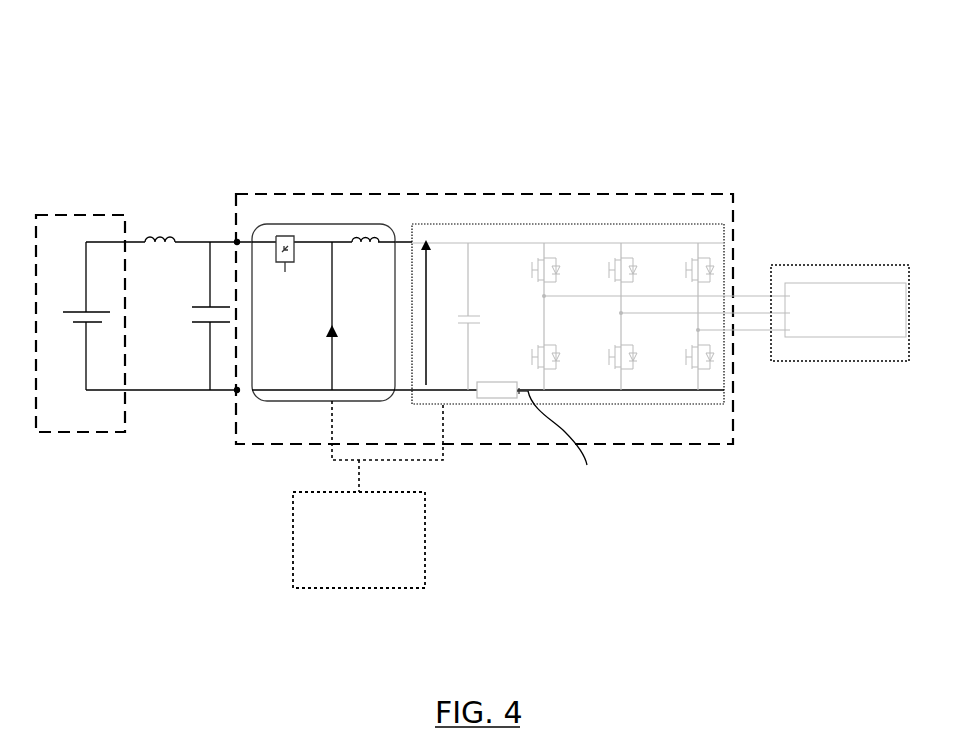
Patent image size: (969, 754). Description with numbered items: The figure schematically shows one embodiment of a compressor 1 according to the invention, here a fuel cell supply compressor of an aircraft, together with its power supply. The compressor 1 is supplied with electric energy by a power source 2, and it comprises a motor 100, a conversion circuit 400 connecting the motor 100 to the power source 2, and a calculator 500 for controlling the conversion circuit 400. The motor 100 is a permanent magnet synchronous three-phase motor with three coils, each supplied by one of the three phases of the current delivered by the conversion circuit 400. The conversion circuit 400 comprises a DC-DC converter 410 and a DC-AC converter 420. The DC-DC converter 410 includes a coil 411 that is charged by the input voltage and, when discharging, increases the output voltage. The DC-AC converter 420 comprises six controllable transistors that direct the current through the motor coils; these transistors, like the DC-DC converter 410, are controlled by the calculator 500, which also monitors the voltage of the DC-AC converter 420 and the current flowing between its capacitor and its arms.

The compressor 1 is at (637, 88).
The power source 2 is at (79, 209).
The motor 100 is at (805, 265).
The conversion circuit 400 is at (332, 193).
The DC-DC converter 410 is at (282, 224).
The coil 411 is at (367, 232).
The DC-AC converter 420 is at (553, 224).
The calculator 500 is at (293, 555).